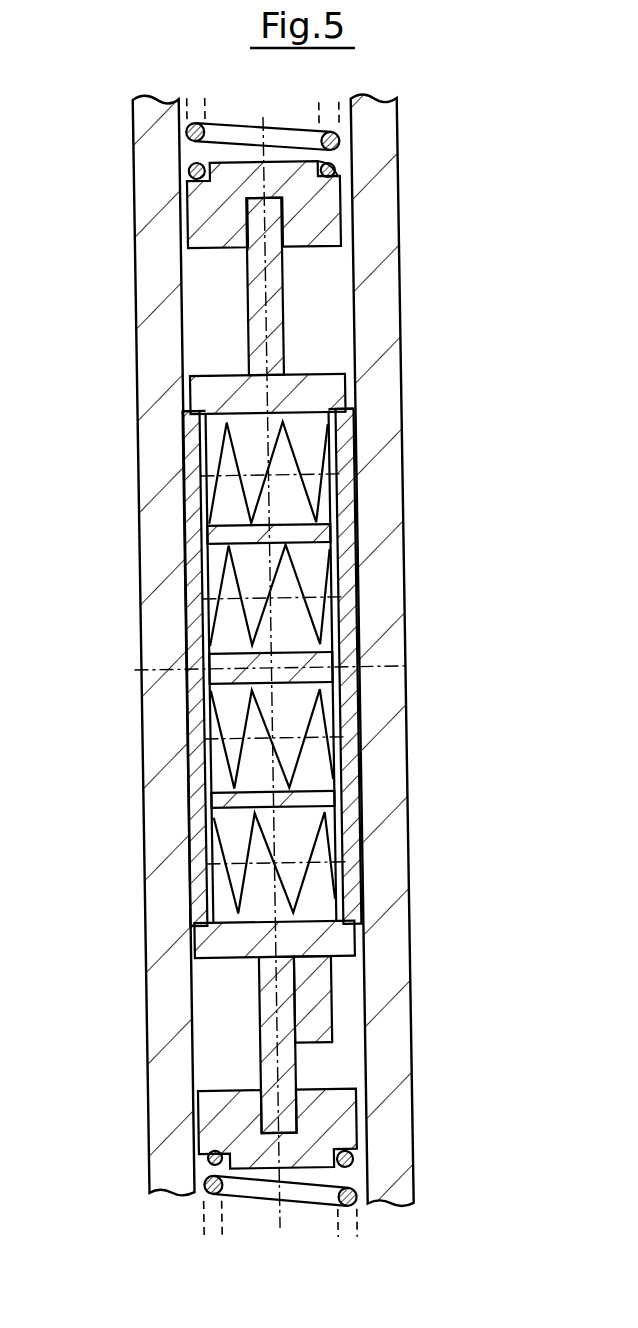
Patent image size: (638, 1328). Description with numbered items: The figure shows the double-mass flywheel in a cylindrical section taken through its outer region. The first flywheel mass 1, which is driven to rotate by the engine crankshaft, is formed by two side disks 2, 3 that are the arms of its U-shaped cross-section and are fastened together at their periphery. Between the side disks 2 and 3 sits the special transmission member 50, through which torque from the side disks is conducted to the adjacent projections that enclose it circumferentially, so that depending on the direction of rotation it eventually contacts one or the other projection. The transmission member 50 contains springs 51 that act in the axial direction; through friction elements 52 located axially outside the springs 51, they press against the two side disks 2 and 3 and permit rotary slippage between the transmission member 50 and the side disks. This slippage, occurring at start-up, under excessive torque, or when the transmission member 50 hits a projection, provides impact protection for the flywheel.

The first flywheel mass 1 is at (118, 465).
The side disk 2 is at (144, 726).
The side disk 3 is at (374, 719).
The transmission member 50 is at (294, 363).
The springs 51 is at (292, 457).
The friction elements 52 is at (341, 538).